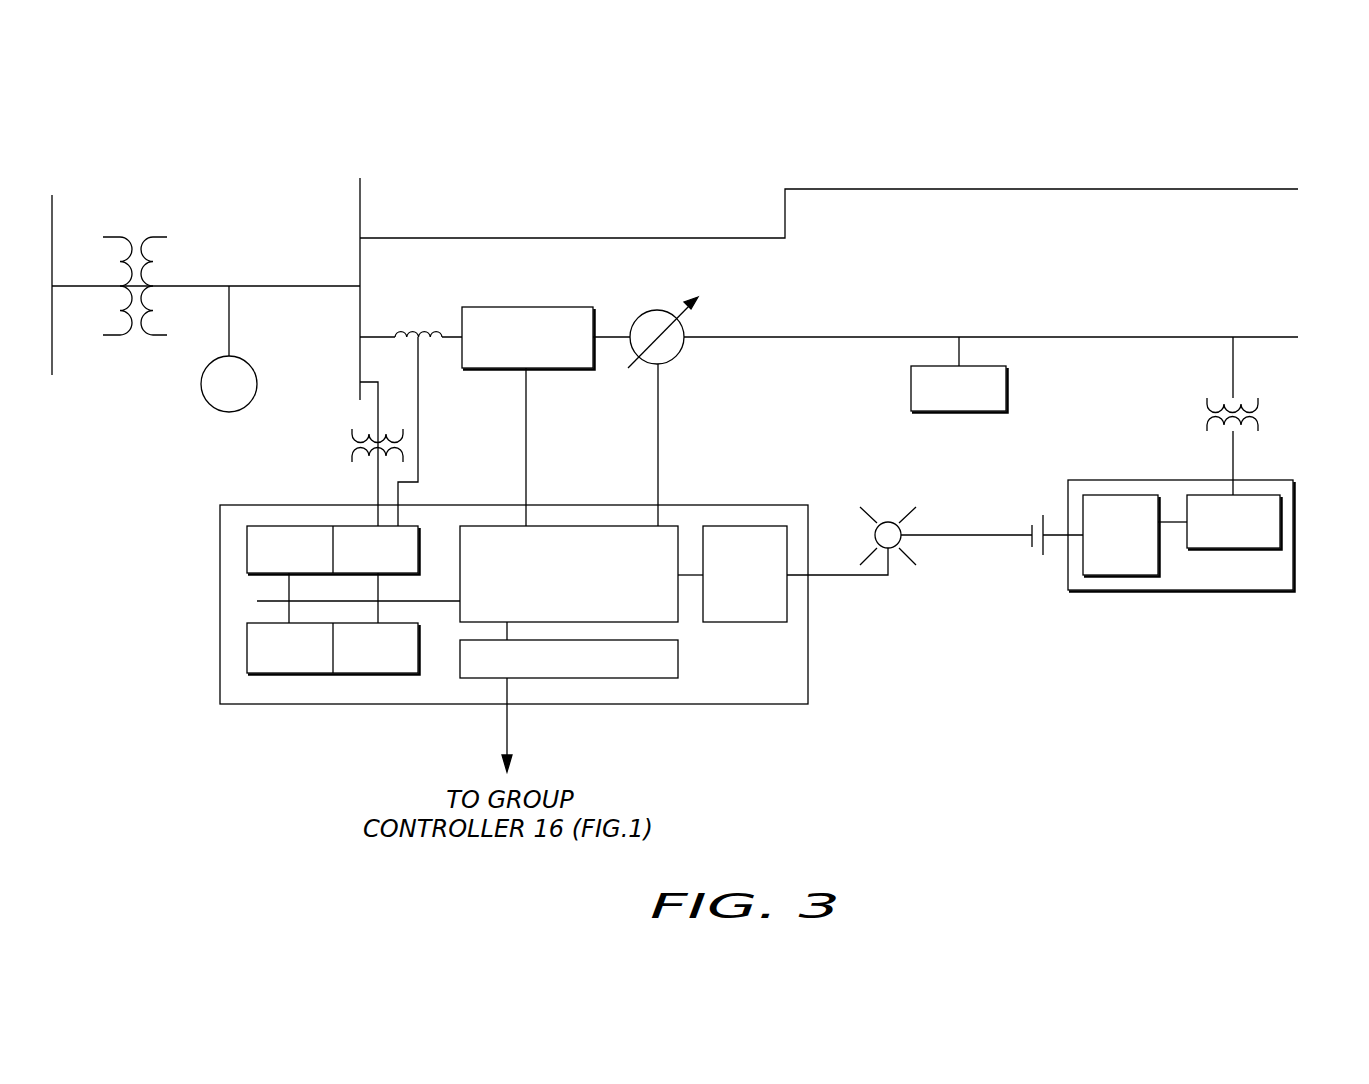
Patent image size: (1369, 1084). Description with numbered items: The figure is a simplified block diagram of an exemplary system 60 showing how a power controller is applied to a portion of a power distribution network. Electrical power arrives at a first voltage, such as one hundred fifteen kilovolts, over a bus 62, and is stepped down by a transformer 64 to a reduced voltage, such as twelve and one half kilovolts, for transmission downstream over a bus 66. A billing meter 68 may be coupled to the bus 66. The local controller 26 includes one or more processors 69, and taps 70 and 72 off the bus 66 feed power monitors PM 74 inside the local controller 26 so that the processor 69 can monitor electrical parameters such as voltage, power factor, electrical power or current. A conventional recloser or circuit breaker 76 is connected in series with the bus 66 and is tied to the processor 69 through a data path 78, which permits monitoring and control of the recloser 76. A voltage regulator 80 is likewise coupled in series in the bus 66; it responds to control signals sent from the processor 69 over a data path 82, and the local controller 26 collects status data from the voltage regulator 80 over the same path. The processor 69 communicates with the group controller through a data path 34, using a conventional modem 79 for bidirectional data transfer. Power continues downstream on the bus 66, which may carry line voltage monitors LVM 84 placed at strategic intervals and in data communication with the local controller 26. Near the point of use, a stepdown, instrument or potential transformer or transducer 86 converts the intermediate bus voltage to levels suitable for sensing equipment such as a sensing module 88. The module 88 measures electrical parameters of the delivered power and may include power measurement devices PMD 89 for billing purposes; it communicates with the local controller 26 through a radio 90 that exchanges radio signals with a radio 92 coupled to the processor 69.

The system 60 is at (1303, 220).
The bus 62 is at (50, 366).
The transformer 64 is at (137, 231).
The bus 66 is at (280, 285).
The billing meter 68 is at (237, 413).
The processor 69 is at (490, 526).
The tap 70 is at (347, 446).
The tap 72 is at (407, 330).
The power monitor 74 is at (345, 622).
The recloser 76 is at (487, 369).
The data path 78 is at (526, 452).
The modem 79 is at (678, 657).
The voltage regulator 80 is at (660, 308).
The data path 82 is at (658, 437).
The line voltage monitor 84 is at (1006, 385).
The transformer 86 is at (1258, 413).
The sensing module 88 is at (1125, 591).
The power measurement device 89 is at (1258, 549).
The radio 90 is at (1110, 493).
The radio 92 is at (752, 525).
The local controller 26 is at (637, 705).
The data path 34 is at (507, 723).